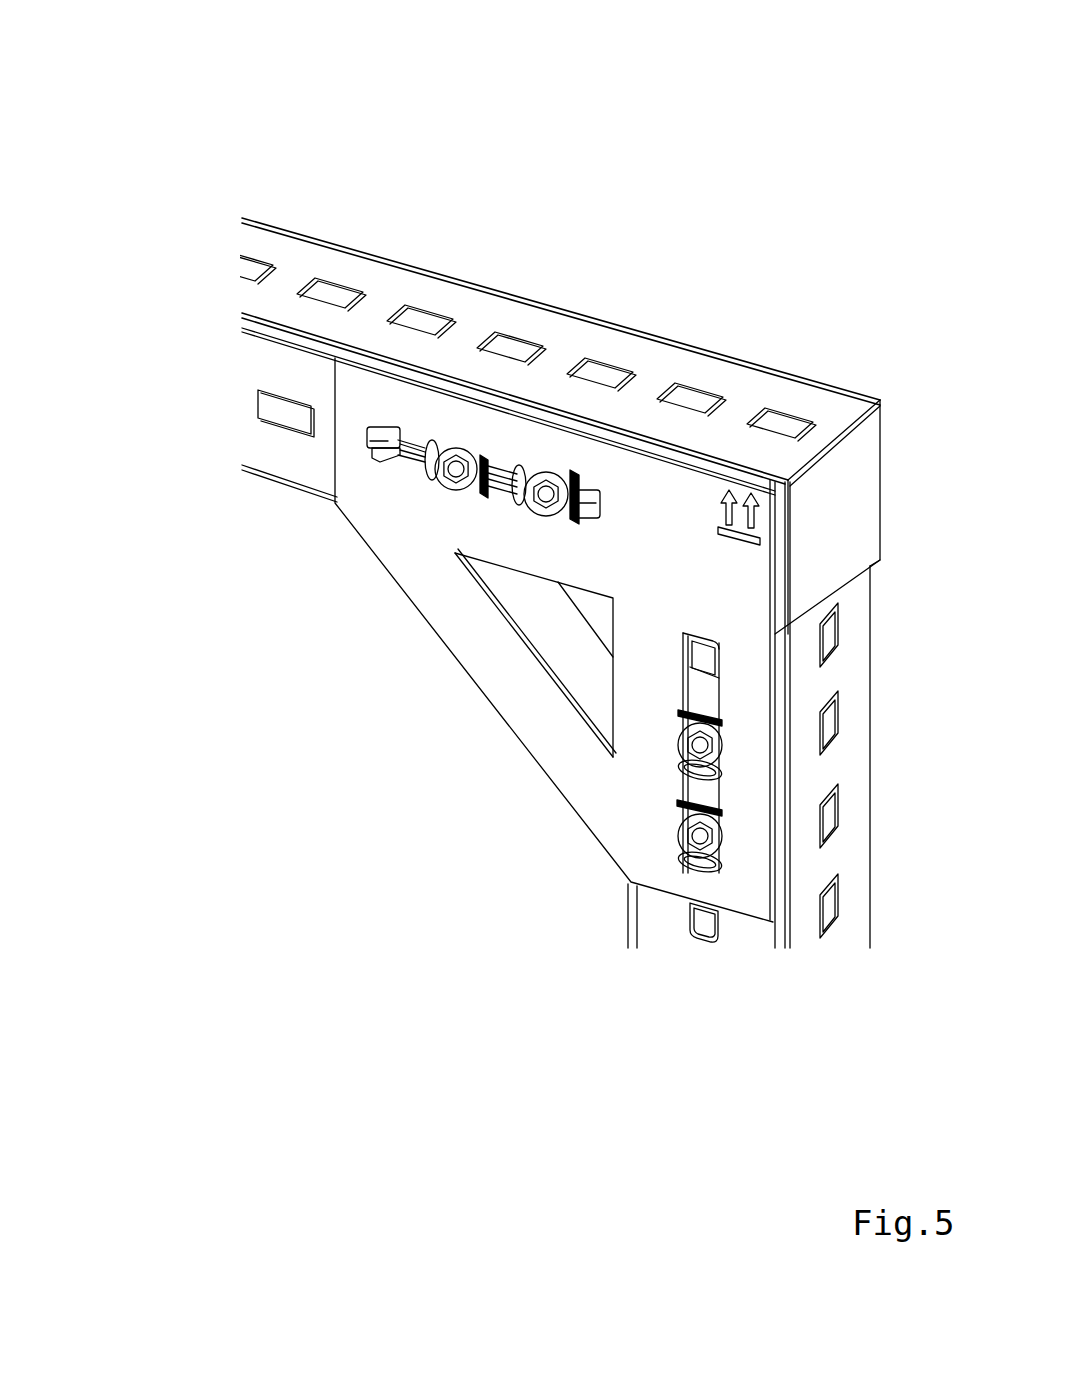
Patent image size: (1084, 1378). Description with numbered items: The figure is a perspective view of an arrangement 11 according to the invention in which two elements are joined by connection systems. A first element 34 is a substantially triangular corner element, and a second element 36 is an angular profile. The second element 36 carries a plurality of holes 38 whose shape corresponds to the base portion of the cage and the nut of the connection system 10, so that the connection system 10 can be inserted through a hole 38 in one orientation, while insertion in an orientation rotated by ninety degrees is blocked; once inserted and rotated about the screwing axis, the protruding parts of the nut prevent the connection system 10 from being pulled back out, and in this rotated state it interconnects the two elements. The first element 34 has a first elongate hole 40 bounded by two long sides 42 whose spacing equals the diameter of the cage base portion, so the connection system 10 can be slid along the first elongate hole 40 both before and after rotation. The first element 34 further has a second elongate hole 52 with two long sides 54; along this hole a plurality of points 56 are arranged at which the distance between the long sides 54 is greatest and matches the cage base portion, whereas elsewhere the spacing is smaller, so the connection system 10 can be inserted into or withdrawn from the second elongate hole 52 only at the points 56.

The connection system 10 is at (555, 468).
The arrangement 11 is at (797, 120).
The first element 34 is at (423, 573).
The second element 36 is at (470, 324).
The holes 38 is at (328, 293).
The first elongate hole 40 is at (693, 695).
The long sides 42 is at (683, 652).
The second elongate hole 52 is at (387, 441).
The long sides 54 is at (383, 427).
The points 56 is at (413, 477).